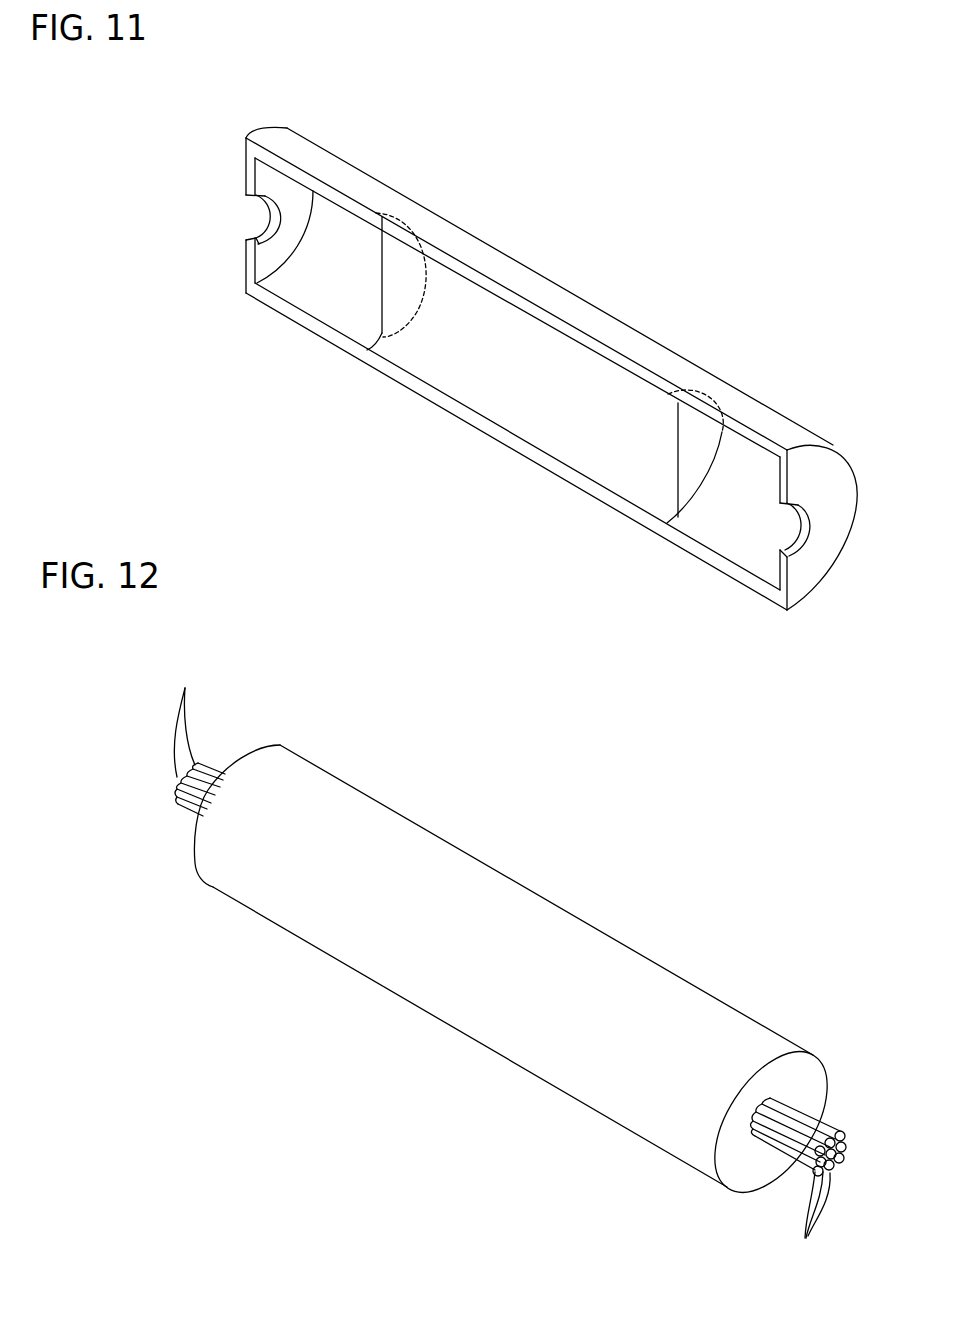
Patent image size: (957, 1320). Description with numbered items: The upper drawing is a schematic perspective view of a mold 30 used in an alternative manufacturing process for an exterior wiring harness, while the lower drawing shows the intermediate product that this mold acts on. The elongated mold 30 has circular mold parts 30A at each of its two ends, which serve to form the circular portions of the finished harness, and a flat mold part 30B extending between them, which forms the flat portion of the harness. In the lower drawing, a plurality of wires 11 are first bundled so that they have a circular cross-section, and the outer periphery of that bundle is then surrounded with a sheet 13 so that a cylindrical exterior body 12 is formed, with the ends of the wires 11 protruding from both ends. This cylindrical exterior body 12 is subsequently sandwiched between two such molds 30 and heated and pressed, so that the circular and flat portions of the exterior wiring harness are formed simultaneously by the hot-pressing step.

In FIG. 11, the mold 30 is at (640, 247).
In FIG. 11, the circular mold part 30A is at (320, 163).
In FIG. 11, the flat mold part 30B is at (515, 277).
In FIG. 12, the wire 11 is at (507, 966).
In FIG. 12, the exterior body 12 is at (552, 837).
In FIG. 12, the sheet 13 is at (467, 873).